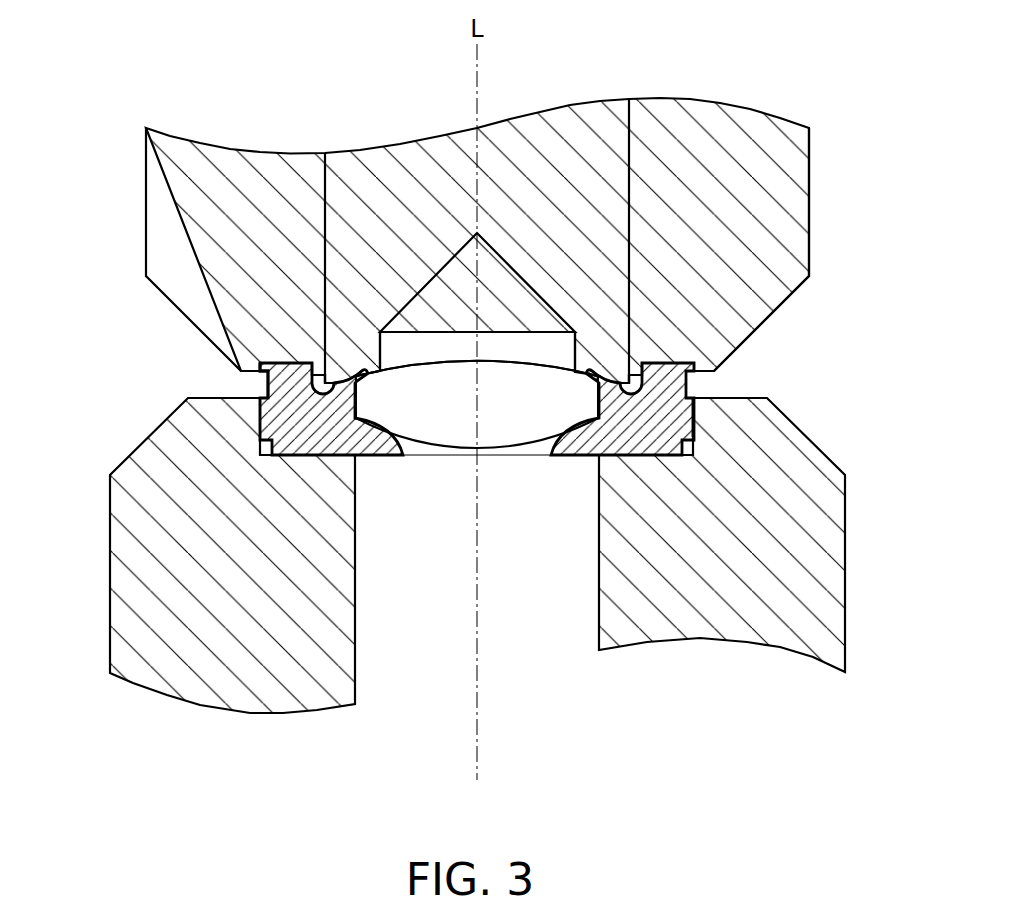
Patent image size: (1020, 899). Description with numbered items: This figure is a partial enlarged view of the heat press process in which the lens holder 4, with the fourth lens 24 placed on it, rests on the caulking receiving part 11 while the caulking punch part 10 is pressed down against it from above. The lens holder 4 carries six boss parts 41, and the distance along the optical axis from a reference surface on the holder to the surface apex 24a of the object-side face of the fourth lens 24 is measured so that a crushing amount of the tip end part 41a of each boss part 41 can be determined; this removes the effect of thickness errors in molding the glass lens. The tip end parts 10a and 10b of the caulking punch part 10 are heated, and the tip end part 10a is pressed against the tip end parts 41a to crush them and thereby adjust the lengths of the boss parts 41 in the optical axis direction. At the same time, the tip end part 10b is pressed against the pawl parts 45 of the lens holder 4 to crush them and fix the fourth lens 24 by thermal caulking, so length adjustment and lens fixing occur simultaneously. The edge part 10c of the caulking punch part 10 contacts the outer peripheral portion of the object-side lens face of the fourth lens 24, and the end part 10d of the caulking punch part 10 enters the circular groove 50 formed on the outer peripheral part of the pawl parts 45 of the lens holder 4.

The caulking punch part 10 is at (517, 222).
The tip end part 10a is at (292, 328).
The tip end part 10b is at (367, 340).
The edge part 10c is at (358, 371).
The end part 10d is at (627, 378).
The pawl parts 45 is at (345, 370).
The fourth lens 24 is at (498, 254).
The surface apex 24a is at (481, 360).
The lens holder 4 is at (370, 260).
The boss parts 41 is at (370, 375).
The tip end part 41a is at (262, 372).
The circular groove 50 is at (688, 410).
The caulking receiving part 11 is at (767, 452).